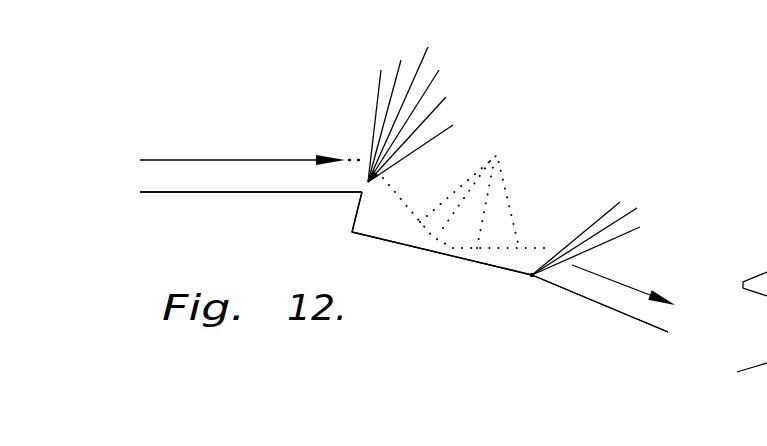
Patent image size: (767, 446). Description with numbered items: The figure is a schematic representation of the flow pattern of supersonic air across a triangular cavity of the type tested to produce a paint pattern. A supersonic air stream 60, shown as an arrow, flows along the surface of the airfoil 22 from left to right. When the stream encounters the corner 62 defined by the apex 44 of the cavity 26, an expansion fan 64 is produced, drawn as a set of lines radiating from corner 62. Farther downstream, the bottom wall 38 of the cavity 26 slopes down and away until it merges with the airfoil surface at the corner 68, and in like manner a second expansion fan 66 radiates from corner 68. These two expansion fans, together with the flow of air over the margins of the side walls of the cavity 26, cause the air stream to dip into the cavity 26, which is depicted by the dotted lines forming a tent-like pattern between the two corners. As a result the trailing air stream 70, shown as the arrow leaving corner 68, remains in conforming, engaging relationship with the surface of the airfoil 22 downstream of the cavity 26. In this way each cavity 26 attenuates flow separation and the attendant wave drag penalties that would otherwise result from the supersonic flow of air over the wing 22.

The airfoil 22 is at (201, 203).
The cavity 26 is at (533, 222).
The bottom wall 38 is at (440, 254).
The apex 44 is at (358, 193).
The supersonic air stream 60 is at (282, 157).
The corner 62 is at (363, 193).
The expansion fan 64 is at (462, 110).
The expansion fan 66 is at (640, 198).
The corner 68 is at (531, 278).
The trailing air stream 70 is at (615, 278).